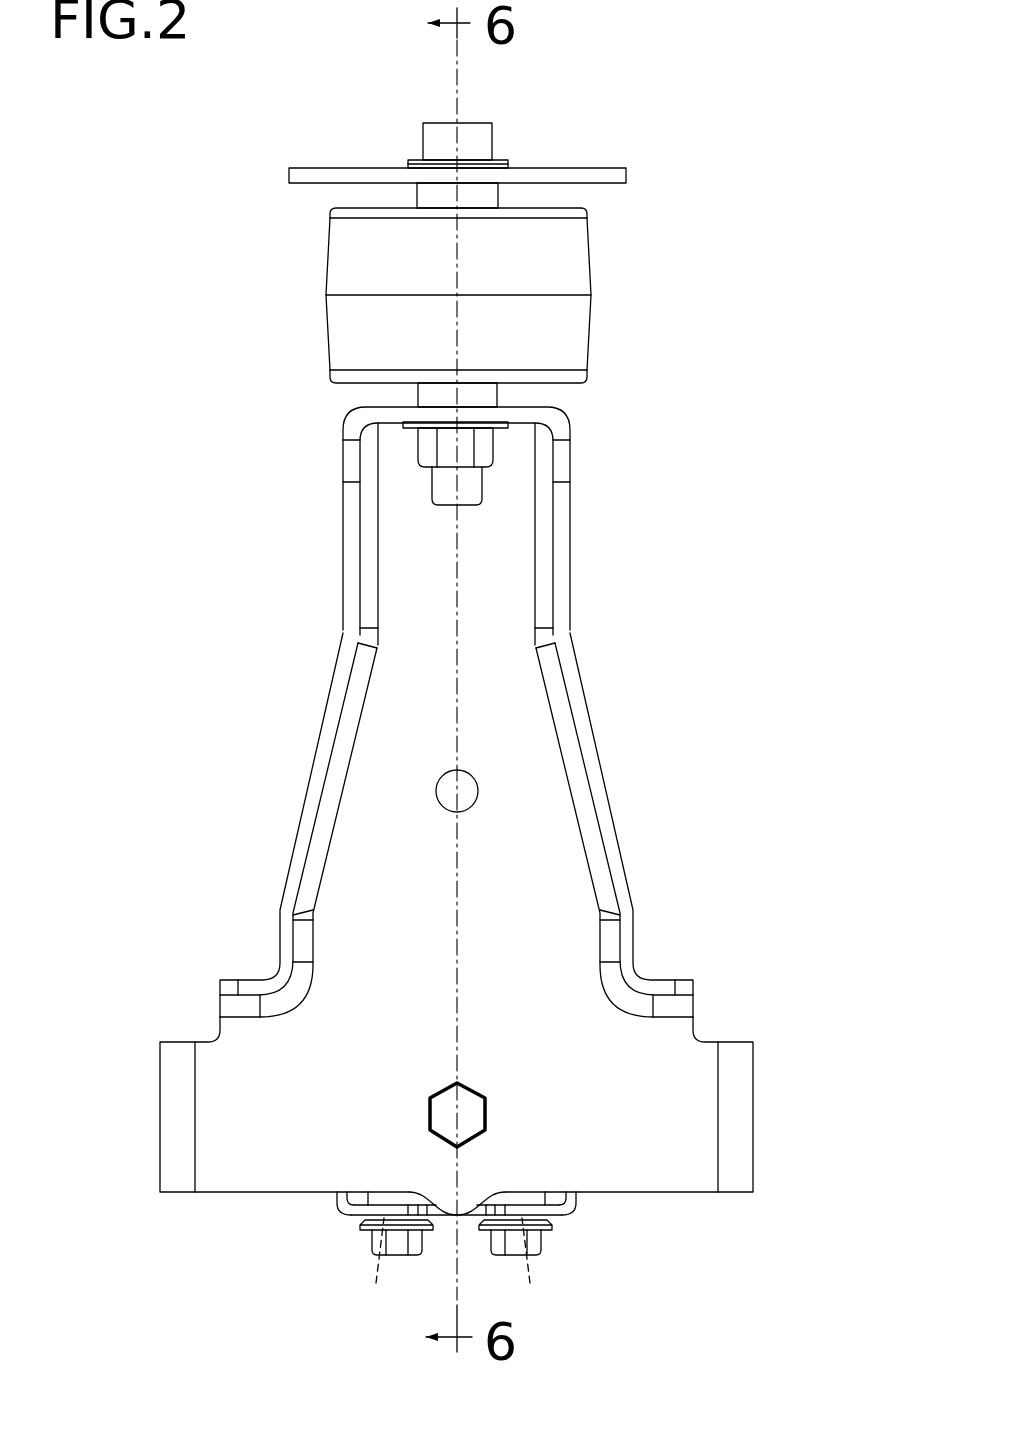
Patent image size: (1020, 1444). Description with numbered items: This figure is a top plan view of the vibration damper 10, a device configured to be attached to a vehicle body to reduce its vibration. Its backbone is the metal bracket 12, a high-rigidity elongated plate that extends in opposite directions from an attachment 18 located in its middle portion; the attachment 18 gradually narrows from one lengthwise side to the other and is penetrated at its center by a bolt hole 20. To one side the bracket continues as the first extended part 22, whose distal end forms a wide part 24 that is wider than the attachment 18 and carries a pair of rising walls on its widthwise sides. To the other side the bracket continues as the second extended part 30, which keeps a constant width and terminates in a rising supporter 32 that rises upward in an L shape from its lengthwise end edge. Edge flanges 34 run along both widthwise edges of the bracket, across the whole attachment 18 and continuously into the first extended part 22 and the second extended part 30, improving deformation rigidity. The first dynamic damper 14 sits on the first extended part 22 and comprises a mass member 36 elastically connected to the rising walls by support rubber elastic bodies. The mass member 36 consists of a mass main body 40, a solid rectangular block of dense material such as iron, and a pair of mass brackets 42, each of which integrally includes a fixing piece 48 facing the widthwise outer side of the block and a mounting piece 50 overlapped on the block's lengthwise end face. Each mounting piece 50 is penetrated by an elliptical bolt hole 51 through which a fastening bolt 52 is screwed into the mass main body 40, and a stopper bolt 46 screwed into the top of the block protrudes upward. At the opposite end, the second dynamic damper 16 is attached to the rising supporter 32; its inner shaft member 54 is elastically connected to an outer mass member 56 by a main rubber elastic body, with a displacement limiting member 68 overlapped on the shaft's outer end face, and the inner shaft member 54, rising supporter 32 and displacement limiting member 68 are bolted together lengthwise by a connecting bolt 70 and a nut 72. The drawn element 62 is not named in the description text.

The vibration damper 10 is at (692, 117).
The metal bracket 12 is at (452, 799).
The first dynamic damper 14 is at (452, 1229).
The second dynamic damper 16 is at (473, 290).
The attachment 18 is at (456, 825).
The bolt hole 20 is at (442, 797).
The first extended part 22 is at (452, 1104).
The wide part 24 is at (272, 1107).
The second extended part 30 is at (456, 527).
The rising supporter 32 is at (397, 415).
The edge flange 34 is at (338, 697).
The mass member 36 is at (444, 1227).
The mass main body 40 is at (456, 1228).
The mass bracket 42 is at (437, 1222).
The stopper bolt 46 is at (469, 1103).
The fixing piece 48 is at (340, 1205).
The mounting piece 50 is at (430, 1220).
The bolt hole 51 is at (453, 1264).
The fastening bolt 52 is at (407, 1245).
The inner shaft member 54 is at (482, 196).
The outer mass member 56 is at (322, 271).
The elastomeric body 62 is at (360, 326).
The displacement limiting member 68 is at (366, 176).
The connecting bolt 70 is at (481, 142).
The nut 72 is at (482, 455).